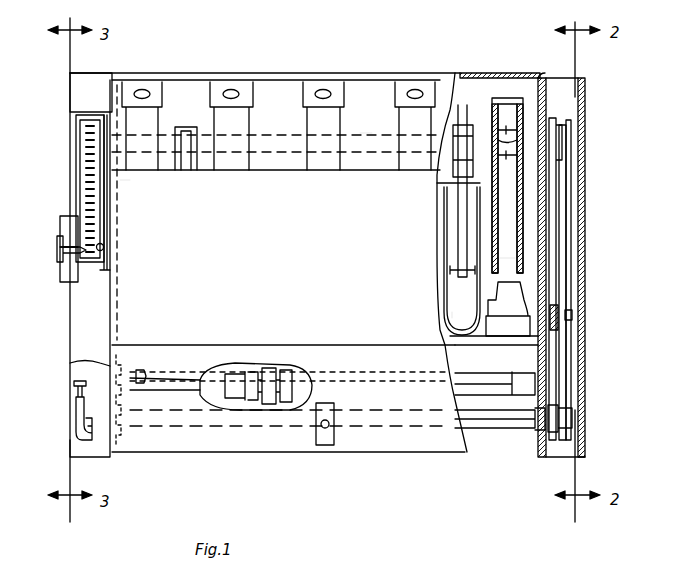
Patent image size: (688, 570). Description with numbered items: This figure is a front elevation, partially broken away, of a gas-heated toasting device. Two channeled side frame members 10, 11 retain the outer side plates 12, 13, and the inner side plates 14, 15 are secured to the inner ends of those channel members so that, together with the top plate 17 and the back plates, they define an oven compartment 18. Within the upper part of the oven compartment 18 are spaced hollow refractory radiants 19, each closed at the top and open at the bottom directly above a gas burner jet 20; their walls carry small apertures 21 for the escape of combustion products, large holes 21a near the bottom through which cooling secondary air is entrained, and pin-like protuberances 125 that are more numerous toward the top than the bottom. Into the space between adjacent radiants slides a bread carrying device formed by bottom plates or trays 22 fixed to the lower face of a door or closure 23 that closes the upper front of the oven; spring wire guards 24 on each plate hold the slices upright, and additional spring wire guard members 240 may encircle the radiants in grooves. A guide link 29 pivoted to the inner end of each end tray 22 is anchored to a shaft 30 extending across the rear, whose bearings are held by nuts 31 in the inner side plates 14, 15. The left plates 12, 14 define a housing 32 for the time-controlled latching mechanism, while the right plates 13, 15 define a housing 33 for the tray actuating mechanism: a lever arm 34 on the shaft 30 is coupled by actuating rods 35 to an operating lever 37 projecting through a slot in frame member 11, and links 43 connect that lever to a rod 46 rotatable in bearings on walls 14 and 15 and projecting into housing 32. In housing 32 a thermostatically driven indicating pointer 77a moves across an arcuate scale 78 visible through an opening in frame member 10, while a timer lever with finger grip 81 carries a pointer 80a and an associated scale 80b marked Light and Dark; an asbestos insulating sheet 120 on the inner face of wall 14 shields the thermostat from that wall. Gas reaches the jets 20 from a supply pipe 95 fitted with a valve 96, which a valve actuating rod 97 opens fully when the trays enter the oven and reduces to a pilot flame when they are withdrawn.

The side frame member 10 is at (78, 96).
The side frame member 11 is at (570, 85).
The outer side plate 12 is at (70, 186).
The outer side plate 13 is at (584, 104).
The inner side plate 14 is at (110, 128).
The inner side plate 15 is at (520, 80).
The top plate 17 is at (472, 73).
The oven compartment 18 is at (278, 126).
The radiants 19 is at (492, 104).
The gas burner jet 20 is at (505, 295).
The small apertures 21 is at (517, 228).
The large holes 21a is at (522, 262).
The bottom plate 22 is at (461, 302).
The door or closure 23 is at (214, 215).
The spring wire guards 24 is at (445, 228).
The guide link 29 is at (462, 254).
The shaft 30 is at (360, 133).
The nuts 31 is at (543, 115).
The housing 32 is at (80, 375).
The housing 33 is at (570, 175).
The lever arm 34 is at (560, 125).
The actuating rods 35 is at (563, 215).
The operating lever 37 is at (556, 315).
The links 43 is at (548, 360).
The rod 46 is at (572, 415).
The indicating pointer 77a is at (104, 248).
The arcuate indicating scale 78 is at (84, 155).
The indicating pointer 80a is at (62, 276).
The scale 80b is at (60, 226).
The finger grip portion 81 is at (58, 250).
The gas supply pipe 95 is at (366, 373).
The valve 96 is at (270, 366).
The valve actuating rod 97 is at (162, 380).
The insulating sheet 120 is at (113, 208).
The pin-like protuberances 125 is at (500, 128).
The guard members 240 is at (450, 183).